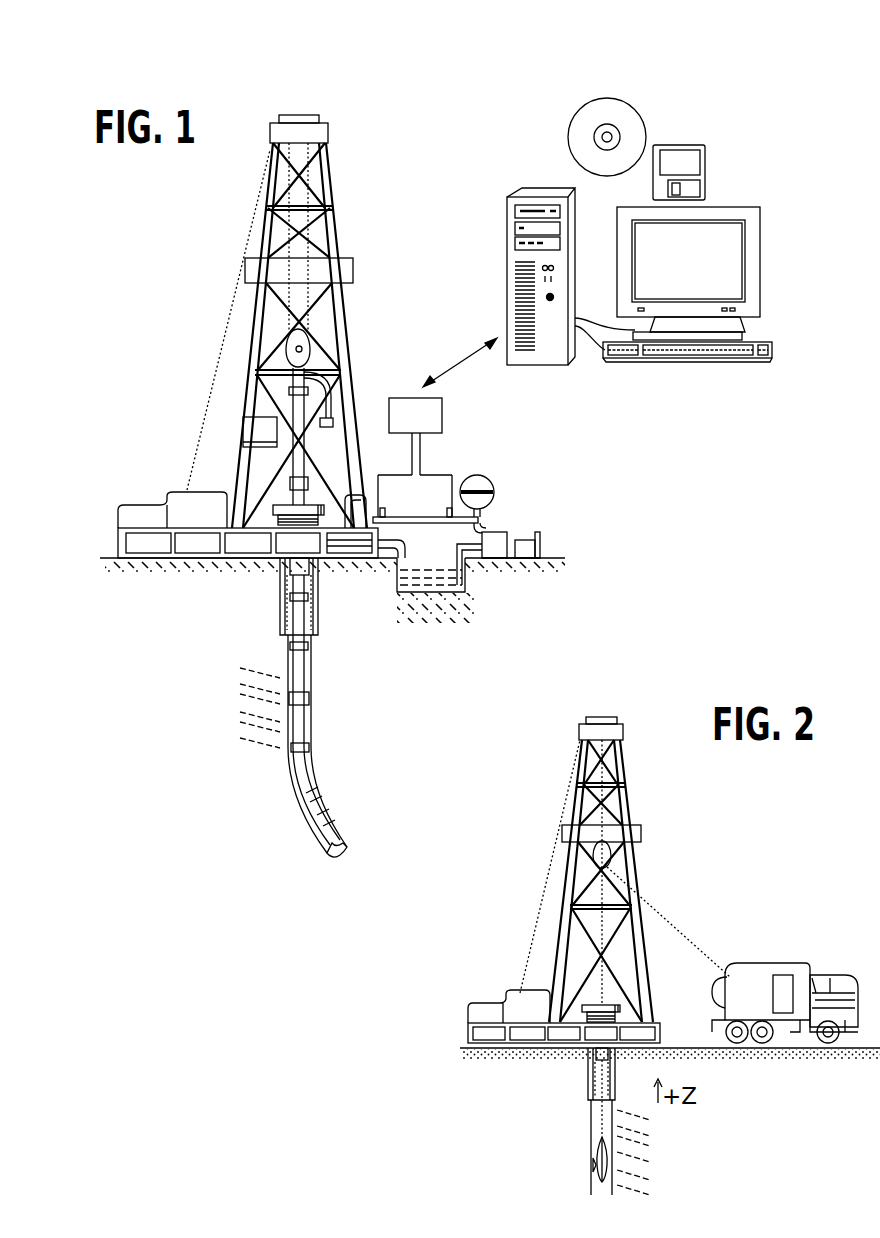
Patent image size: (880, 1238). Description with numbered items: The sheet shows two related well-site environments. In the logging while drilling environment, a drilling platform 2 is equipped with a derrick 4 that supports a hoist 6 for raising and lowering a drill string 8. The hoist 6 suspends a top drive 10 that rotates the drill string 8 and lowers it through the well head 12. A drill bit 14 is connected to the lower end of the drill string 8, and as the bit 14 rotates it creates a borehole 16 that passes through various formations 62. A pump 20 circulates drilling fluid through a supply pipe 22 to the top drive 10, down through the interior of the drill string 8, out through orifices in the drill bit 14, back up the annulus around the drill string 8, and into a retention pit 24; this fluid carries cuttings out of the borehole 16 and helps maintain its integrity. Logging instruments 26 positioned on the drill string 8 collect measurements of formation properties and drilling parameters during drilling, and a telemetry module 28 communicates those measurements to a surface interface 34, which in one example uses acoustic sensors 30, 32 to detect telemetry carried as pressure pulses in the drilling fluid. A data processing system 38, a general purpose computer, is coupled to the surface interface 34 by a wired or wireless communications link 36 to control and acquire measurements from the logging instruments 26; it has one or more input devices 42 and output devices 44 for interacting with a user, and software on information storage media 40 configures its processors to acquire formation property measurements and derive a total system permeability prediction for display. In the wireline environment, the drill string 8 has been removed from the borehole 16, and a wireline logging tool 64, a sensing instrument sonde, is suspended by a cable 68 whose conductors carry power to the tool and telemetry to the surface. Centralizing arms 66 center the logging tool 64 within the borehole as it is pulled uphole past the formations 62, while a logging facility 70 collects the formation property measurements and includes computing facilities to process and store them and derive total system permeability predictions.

In FIG. 1, the drilling platform 2 is at (119, 535).
In FIG. 2, the drilling platform 2 is at (660, 1027).
In FIG. 1, the derrick 4 is at (334, 232).
In FIG. 2, the derrick 4 is at (652, 1005).
In FIG. 1, the hoist 6 is at (305, 342).
In FIG. 2, the hoist 6 is at (613, 852).
In FIG. 1, the drill string 8 is at (305, 665).
In FIG. 1, the top drive 10 is at (298, 412).
In FIG. 1, the well head 12 is at (280, 500).
In FIG. 2, the well head 12 is at (612, 1005).
In FIG. 1, the drill bit 14 is at (333, 833).
In FIG. 1, the borehole 16 is at (312, 680).
In FIG. 1, the mud pump 20 is at (497, 535).
In FIG. 1, the supply pipe 22 is at (470, 523).
In FIG. 1, the retention pit 24 is at (415, 575).
In FIG. 1, the logging instruments 26 is at (318, 817).
In FIG. 1, the telemetry module 28 is at (305, 800).
In FIG. 1, the acoustic sensor 30 is at (381, 508).
In FIG. 1, the acoustic sensor 32 is at (448, 508).
In FIG. 1, the surface interface 34 is at (415, 436).
In FIG. 1, the communications link 36 is at (460, 358).
In FIG. 1, the data processing system 38 is at (572, 322).
In FIG. 1, the information storage media 40 is at (667, 143).
In FIG. 1, the input devices 42 is at (752, 359).
In FIG. 1, the output devices 44 is at (742, 318).
In FIG. 1, the formations 62 is at (236, 667).
In FIG. 2, the formations 62 is at (653, 1123).
In FIG. 2, the wireline logging tool 64 is at (597, 1152).
In FIG. 2, the centralizing arms 66 is at (592, 1165).
In FIG. 2, the cable 68 is at (650, 905).
In FIG. 2, the logging facility 70 is at (757, 966).